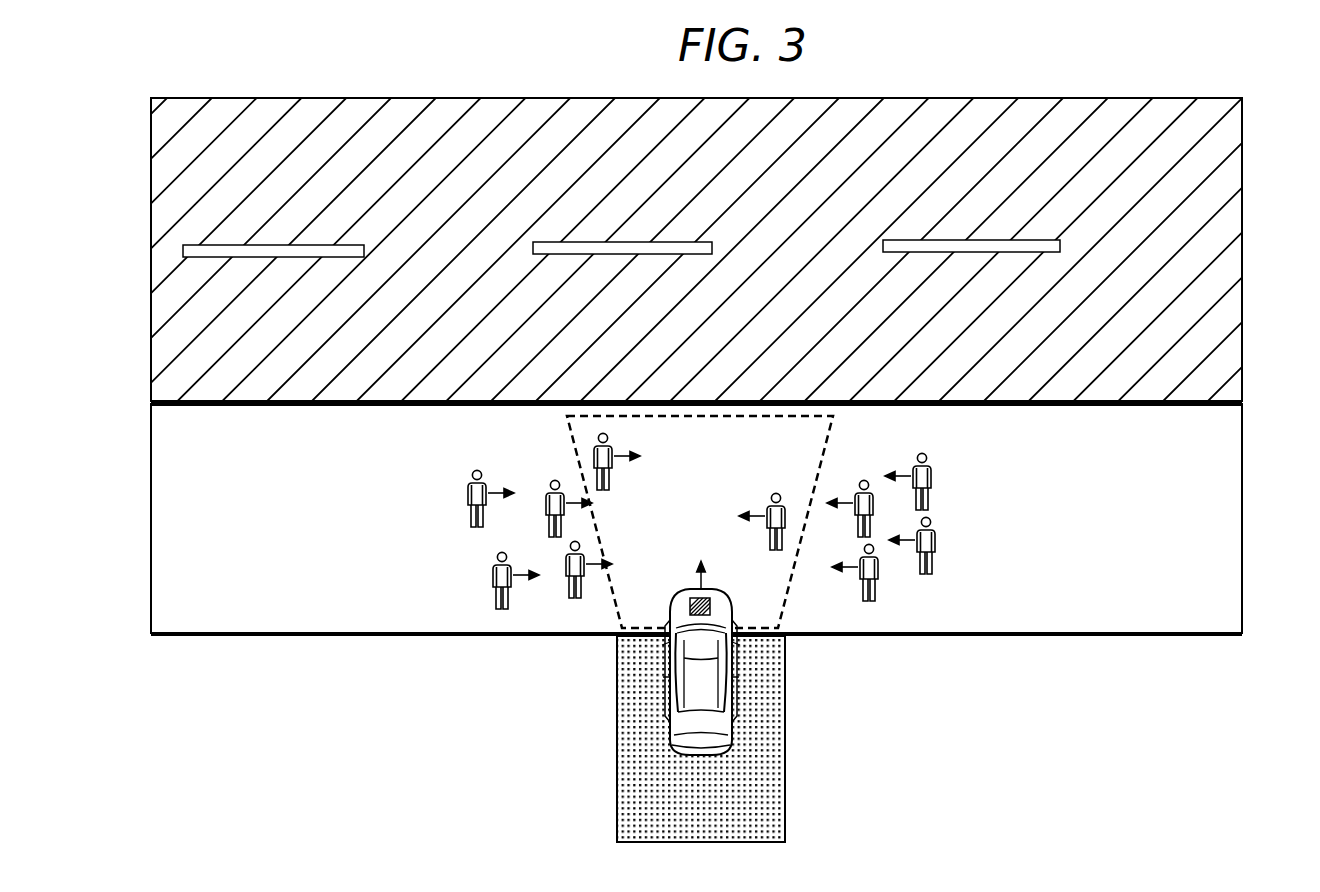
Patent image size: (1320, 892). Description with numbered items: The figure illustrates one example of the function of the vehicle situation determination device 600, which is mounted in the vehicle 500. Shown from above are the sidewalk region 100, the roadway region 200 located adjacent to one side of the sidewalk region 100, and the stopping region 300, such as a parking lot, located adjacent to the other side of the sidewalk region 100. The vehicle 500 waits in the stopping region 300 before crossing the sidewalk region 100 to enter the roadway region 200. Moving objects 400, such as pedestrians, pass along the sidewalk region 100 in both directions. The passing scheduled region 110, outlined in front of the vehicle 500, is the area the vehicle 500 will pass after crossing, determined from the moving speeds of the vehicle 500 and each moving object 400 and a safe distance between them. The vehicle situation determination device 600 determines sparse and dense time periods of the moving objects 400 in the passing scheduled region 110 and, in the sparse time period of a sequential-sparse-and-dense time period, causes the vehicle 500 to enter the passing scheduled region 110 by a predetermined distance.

The sidewalk region 100 is at (1243, 520).
The passing scheduled region 110 is at (828, 430).
The roadway region 200 is at (1243, 262).
The stopping region 300 is at (785, 677).
The moving objects 400 is at (937, 530).
The vehicle 500 is at (708, 727).
The vehicle situation determination device 600 is at (712, 603).